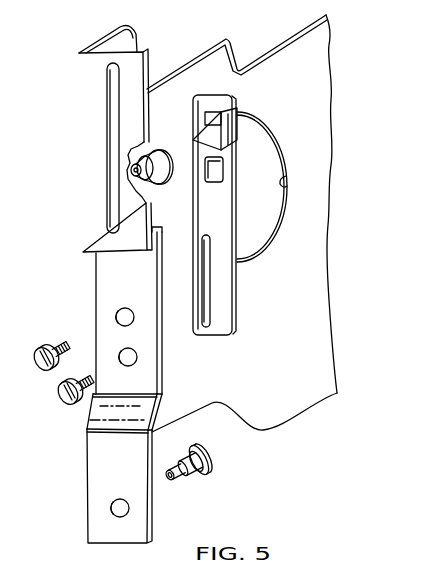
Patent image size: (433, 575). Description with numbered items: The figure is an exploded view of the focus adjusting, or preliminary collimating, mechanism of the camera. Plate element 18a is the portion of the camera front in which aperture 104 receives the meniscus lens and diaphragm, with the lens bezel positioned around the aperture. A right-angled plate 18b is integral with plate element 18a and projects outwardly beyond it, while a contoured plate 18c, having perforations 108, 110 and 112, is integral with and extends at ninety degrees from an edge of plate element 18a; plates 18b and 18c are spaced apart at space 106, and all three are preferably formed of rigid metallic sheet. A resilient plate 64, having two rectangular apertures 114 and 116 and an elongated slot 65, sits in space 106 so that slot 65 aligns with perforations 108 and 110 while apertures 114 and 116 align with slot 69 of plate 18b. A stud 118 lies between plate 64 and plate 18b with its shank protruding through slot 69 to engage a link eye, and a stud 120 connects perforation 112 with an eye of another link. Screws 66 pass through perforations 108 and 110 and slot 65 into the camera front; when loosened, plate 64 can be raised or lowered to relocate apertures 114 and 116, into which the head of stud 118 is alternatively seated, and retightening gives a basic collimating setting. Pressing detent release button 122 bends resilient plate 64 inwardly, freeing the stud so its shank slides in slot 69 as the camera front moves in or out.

The plate element 18a is at (316, 96).
The right-angled plate 18b is at (111, 139).
The contoured plate 18c is at (120, 385).
The resilient plate 64 is at (237, 208).
The elongated slot 65 is at (210, 313).
The screws 66 is at (56, 392).
The slot 69 is at (119, 84).
The aperture 104 is at (286, 176).
The space 106 is at (157, 240).
The perforation 108 is at (130, 307).
The perforation 110 is at (131, 365).
The perforation 112 is at (121, 497).
The rectangular aperture 114 is at (237, 124).
The rectangular aperture 116 is at (205, 172).
The stud 118 is at (178, 151).
The stud 120 is at (201, 473).
The detent release button 122 is at (217, 142).